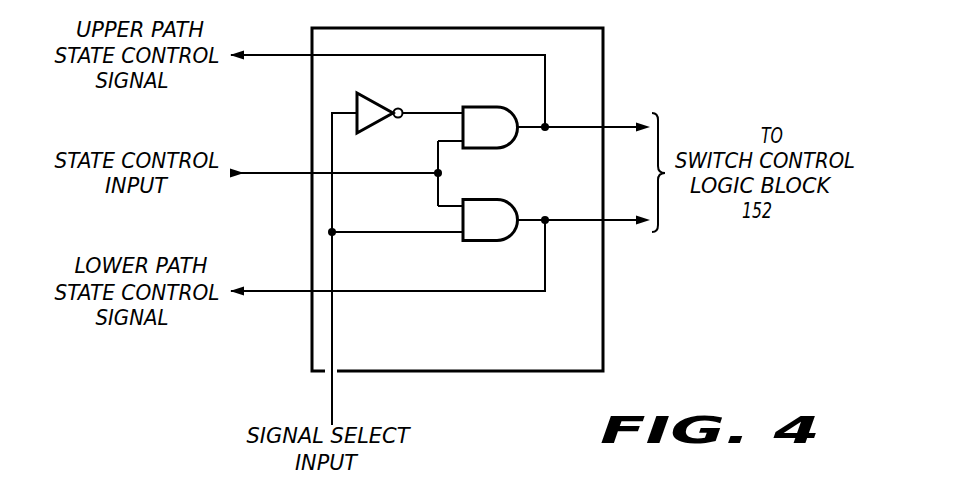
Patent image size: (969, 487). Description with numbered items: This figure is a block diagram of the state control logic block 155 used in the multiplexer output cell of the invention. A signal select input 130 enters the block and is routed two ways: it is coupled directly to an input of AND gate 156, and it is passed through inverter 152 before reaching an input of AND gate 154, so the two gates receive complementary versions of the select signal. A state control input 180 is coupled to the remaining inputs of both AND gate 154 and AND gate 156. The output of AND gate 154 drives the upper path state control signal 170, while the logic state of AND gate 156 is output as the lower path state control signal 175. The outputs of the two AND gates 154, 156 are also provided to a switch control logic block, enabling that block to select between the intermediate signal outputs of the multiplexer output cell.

The signal select input 130 is at (333, 401).
The inverter 152 is at (377, 134).
The AND gate 154 is at (485, 106).
The state control logic block 155 is at (515, 371).
The AND gate 156 is at (478, 242).
The upper path state control signal 170 is at (276, 54).
The lower path state control signal 175 is at (276, 290).
The state control input 180 is at (276, 172).